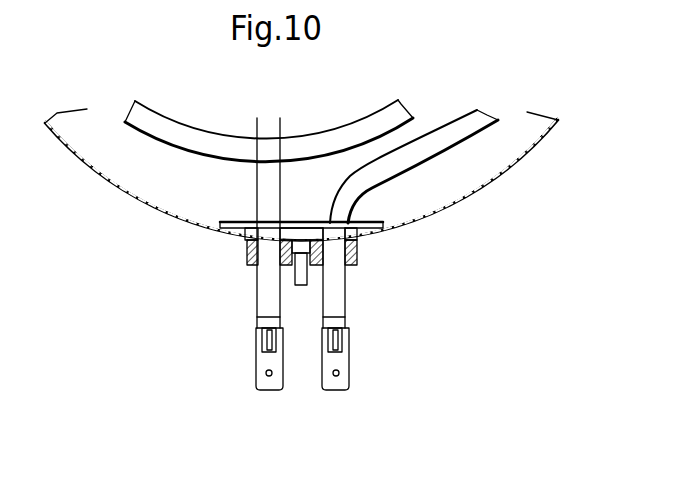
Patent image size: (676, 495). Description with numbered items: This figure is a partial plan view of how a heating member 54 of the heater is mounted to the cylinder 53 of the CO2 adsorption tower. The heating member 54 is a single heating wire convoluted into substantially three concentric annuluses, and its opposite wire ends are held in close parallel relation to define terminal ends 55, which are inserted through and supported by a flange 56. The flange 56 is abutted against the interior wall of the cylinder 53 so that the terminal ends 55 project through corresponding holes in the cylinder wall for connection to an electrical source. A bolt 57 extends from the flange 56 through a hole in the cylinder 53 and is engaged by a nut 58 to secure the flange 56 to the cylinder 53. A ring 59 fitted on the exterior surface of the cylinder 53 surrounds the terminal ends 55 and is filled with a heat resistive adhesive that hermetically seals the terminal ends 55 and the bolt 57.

The cylinder 53 is at (497, 180).
The heating member 54 is at (155, 138).
The terminal ends 55 is at (257, 300).
The flange 56 is at (217, 232).
The bolt 57 is at (308, 280).
The nut 58 is at (305, 243).
The ring 59 is at (247, 260).